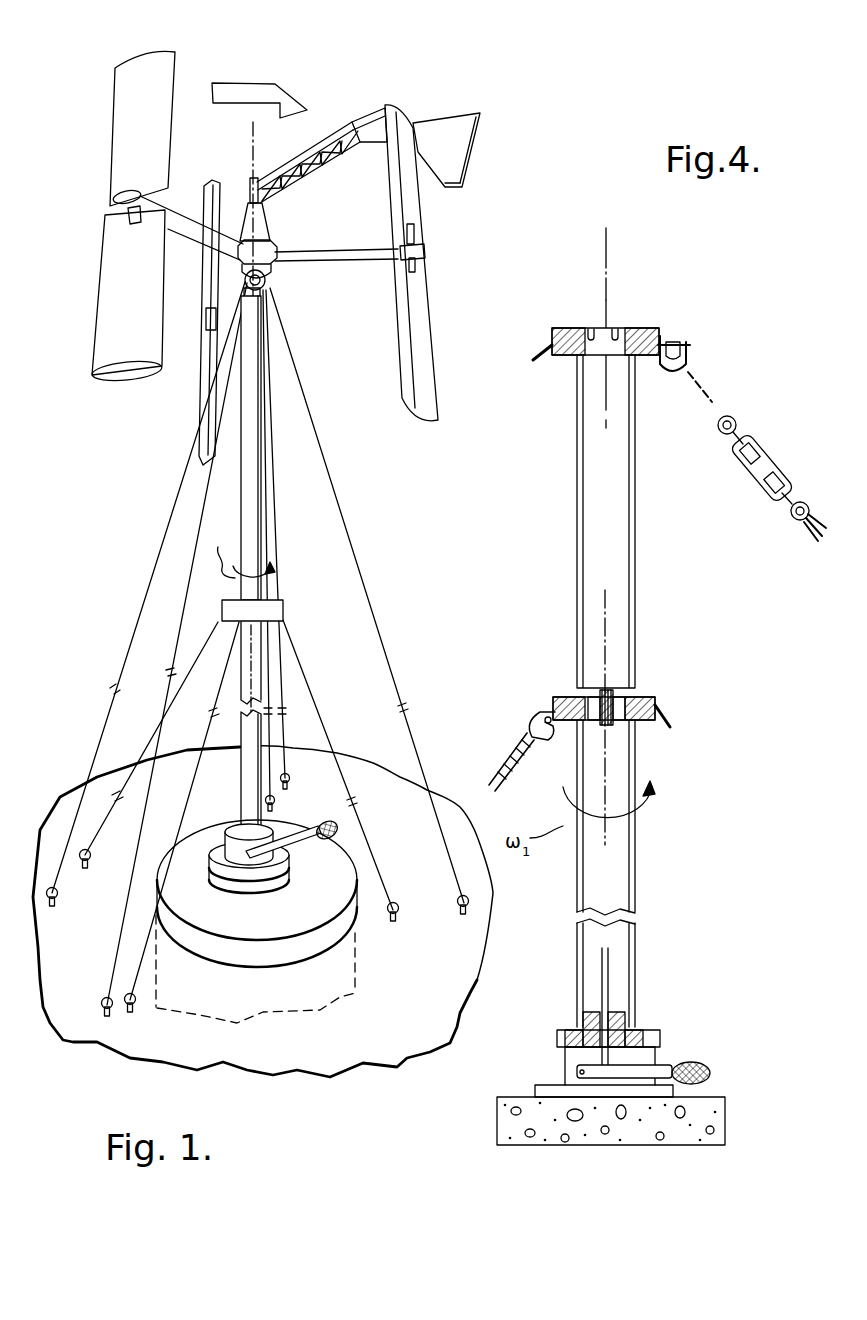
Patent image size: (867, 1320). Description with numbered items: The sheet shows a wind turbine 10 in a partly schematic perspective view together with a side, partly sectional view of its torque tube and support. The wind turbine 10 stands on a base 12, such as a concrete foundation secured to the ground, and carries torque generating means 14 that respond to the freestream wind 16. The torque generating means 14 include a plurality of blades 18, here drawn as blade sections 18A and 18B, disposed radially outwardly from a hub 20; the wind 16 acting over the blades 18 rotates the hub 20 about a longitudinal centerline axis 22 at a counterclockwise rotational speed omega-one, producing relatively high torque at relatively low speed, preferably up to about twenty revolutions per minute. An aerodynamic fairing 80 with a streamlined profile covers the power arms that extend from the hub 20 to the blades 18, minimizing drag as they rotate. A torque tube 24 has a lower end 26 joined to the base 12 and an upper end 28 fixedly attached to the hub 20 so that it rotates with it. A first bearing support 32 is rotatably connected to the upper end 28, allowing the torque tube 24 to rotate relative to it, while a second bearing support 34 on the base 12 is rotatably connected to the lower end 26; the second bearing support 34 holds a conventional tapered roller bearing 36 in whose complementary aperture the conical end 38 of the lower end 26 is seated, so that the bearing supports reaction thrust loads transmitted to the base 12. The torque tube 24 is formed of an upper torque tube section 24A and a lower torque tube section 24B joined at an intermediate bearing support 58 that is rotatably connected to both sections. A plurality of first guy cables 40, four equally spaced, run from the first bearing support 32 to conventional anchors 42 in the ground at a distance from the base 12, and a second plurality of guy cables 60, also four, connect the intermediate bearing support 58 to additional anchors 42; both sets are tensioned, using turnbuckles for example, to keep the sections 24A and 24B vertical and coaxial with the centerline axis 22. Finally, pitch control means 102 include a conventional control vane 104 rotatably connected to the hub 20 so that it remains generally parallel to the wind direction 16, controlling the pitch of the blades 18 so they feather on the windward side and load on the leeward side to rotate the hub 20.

In FIG. 1, the wind turbine 10 is at (135, 495).
In FIG. 1, the base 12 is at (283, 955).
In FIG. 4, the base 12 is at (726, 1118).
In FIG. 1, the torque generating means 14 is at (445, 216).
In FIG. 1, the freestream wind 16 is at (250, 84).
In FIG. 4, the freestream wind 16 is at (730, 1062).
In FIG. 1, the blades 18 is at (209, 176).
In FIG. 1, the upper blade section 18A is at (112, 82).
In FIG. 1, the lower blade section 18B is at (98, 277).
In FIG. 1, the hub 20 is at (288, 236).
In FIG. 1, the longitudinal centerline axis 22 is at (256, 136).
In FIG. 4, the longitudinal centerline axis 22 is at (607, 258).
In FIG. 1, the torque tube 24 is at (296, 564).
In FIG. 4, the torque tube 24 is at (661, 691).
In FIG. 1, the upper torque tube section 24A is at (262, 453).
In FIG. 4, the upper torque tube section 24A is at (637, 497).
In FIG. 1, the lower torque tube section 24B is at (240, 738).
In FIG. 4, the lower torque tube section 24B is at (636, 757).
In FIG. 1, the lower end 26 is at (260, 830).
In FIG. 4, the lower end 26 is at (582, 1022).
In FIG. 1, the upper end 28 is at (262, 300).
In FIG. 1, the first bearing support 32 is at (268, 285).
In FIG. 4, the first bearing support 32 is at (672, 322).
In FIG. 1, the second bearing support 34 is at (213, 846).
In FIG. 4, the second bearing support 34 is at (660, 1036).
In FIG. 4, the tapered roller bearing 36 is at (565, 1040).
In FIG. 4, the conical end 38 is at (615, 1014).
In FIG. 1, the first guy cables 40 is at (388, 655).
In FIG. 1, the anchors 42 is at (400, 903).
In FIG. 1, the intermediate bearing support 58 is at (286, 606).
In FIG. 4, the intermediate bearing support 58 is at (656, 700).
In FIG. 1, the second guy cables 60 is at (356, 824).
In FIG. 1, the aerodynamic fairing 80 is at (370, 260).
In FIG. 1, the pitch control means 102 is at (367, 105).
In FIG. 1, the control vane 104 is at (470, 112).